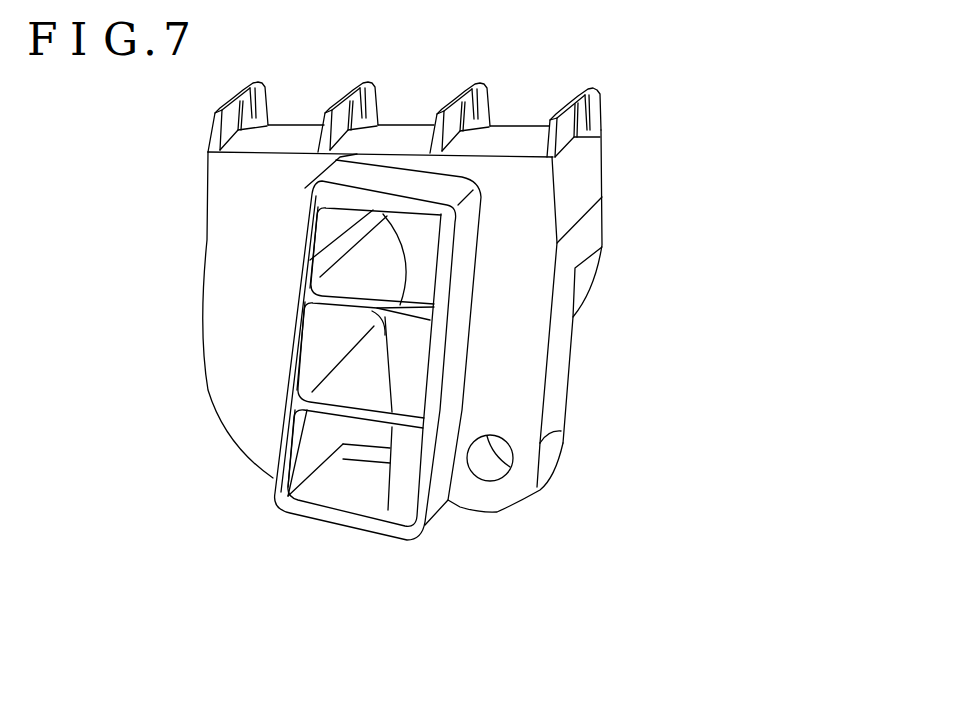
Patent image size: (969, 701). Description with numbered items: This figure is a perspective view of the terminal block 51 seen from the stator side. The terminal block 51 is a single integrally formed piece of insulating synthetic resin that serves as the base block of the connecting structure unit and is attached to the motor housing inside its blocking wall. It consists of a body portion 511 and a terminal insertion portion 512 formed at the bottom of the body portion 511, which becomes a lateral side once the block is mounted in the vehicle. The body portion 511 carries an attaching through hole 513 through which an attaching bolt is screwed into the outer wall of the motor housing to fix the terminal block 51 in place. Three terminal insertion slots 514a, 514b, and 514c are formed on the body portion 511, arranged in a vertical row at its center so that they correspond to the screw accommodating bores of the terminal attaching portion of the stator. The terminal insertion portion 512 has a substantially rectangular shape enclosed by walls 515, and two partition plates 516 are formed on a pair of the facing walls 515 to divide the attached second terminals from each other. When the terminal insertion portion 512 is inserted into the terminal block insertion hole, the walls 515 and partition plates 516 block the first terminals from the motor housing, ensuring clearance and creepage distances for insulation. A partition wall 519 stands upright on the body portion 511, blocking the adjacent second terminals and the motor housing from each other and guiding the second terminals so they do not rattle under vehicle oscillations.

The terminal block 51 is at (697, 118).
The body portion 511 is at (598, 194).
The terminal insertion portion 512 is at (460, 320).
The attaching through hole 513 is at (482, 462).
The terminal insertion slot 514a is at (327, 232).
The terminal insertion slot 514b is at (322, 322).
The terminal insertion slot 514c is at (313, 460).
The wall 515 is at (297, 342).
The partition plate 516 is at (380, 415).
The partition wall 519 is at (587, 273).